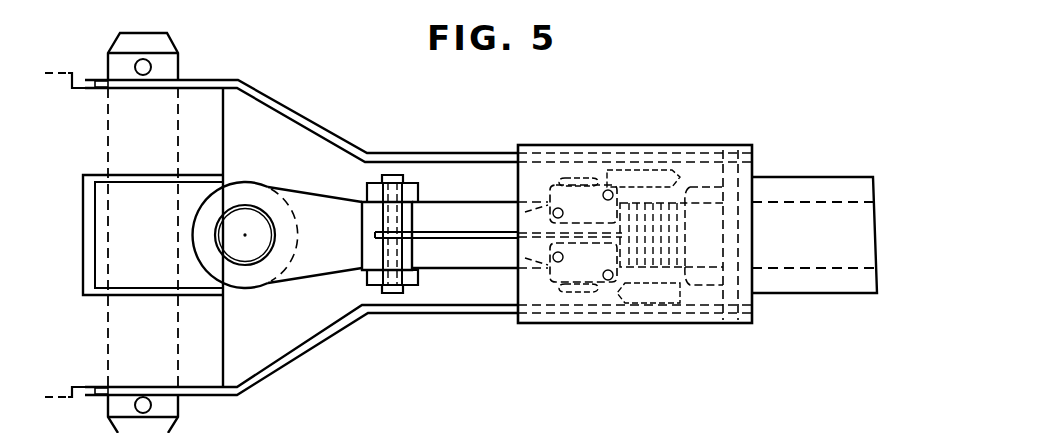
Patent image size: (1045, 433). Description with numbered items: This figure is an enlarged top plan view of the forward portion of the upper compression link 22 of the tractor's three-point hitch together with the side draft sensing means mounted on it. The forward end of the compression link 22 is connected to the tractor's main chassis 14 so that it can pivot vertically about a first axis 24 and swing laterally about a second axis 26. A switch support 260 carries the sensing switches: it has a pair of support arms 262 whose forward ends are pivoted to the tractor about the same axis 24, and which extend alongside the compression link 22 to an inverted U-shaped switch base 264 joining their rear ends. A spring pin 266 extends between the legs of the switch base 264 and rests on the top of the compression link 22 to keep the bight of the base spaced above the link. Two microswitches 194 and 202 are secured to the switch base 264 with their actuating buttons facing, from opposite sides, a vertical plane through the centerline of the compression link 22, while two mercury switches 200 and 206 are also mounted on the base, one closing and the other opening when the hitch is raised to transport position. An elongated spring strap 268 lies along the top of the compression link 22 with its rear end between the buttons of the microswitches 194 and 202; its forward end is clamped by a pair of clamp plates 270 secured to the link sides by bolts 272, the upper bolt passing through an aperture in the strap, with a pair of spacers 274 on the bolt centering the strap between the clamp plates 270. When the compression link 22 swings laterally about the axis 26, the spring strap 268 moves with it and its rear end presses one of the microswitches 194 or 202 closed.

The main chassis 14 is at (71, 75).
The upper compression link 22 is at (808, 287).
The first axis 24 is at (163, 64).
The second axis 26 is at (248, 216).
The microswitch 194 is at (548, 210).
The mercury switch 200 is at (659, 147).
The microswitch 202 is at (550, 263).
The mercury switch 206 is at (665, 312).
The switch support 260 is at (699, 134).
The support arms 262 is at (297, 118).
The switch base 264 is at (745, 146).
The spring pin 266 is at (745, 170).
The spring strap 268 is at (471, 238).
The clamp plates 270 is at (412, 198).
The bolts 272 is at (385, 292).
The spacers 274 is at (405, 233).